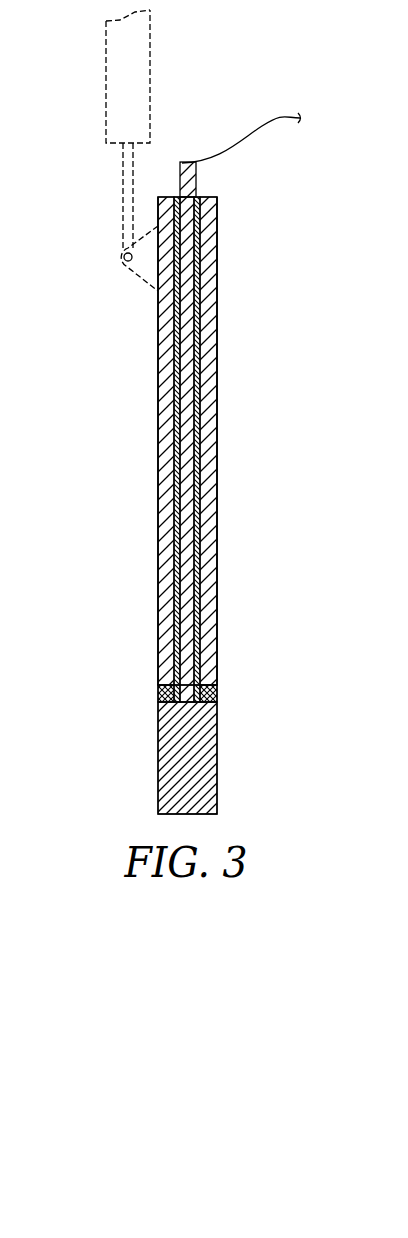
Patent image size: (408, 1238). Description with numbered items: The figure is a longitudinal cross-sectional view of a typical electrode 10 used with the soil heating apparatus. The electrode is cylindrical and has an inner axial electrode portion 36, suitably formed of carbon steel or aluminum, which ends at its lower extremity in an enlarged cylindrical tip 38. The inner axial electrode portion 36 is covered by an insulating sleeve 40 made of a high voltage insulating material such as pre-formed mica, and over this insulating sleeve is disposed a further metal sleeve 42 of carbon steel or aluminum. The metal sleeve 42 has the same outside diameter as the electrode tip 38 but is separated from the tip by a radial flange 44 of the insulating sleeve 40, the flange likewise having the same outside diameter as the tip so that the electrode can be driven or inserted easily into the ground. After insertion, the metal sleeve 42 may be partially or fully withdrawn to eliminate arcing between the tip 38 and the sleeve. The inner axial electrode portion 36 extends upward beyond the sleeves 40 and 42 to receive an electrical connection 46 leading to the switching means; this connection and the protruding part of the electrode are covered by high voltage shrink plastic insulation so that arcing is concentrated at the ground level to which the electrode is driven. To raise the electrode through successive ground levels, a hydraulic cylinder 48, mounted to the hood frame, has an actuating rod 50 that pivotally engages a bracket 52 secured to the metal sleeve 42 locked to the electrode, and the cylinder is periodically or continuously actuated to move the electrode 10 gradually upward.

The electrode 10 is at (157, 588).
The inner axial electrode portion 36 is at (187, 537).
The electrode tip 38 is at (218, 802).
The insulating sleeve 40 is at (200, 267).
The metal sleeve 42 is at (210, 430).
The radial flange 44 is at (218, 693).
The electrical connection 46 is at (256, 128).
The hydraulic cylinder 48 is at (105, 88).
The actuating rod 50 is at (122, 208).
The bracket 52 is at (142, 282).